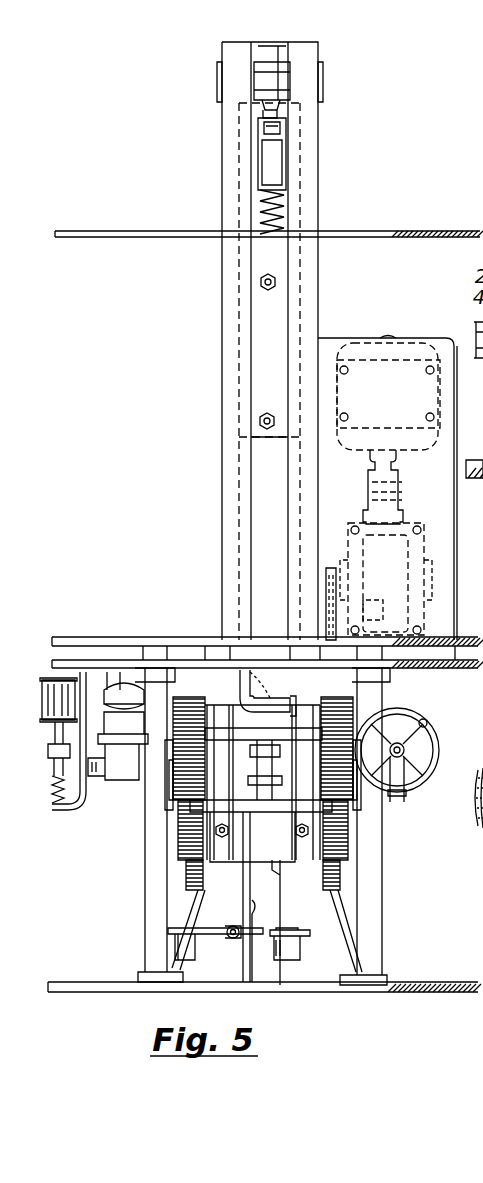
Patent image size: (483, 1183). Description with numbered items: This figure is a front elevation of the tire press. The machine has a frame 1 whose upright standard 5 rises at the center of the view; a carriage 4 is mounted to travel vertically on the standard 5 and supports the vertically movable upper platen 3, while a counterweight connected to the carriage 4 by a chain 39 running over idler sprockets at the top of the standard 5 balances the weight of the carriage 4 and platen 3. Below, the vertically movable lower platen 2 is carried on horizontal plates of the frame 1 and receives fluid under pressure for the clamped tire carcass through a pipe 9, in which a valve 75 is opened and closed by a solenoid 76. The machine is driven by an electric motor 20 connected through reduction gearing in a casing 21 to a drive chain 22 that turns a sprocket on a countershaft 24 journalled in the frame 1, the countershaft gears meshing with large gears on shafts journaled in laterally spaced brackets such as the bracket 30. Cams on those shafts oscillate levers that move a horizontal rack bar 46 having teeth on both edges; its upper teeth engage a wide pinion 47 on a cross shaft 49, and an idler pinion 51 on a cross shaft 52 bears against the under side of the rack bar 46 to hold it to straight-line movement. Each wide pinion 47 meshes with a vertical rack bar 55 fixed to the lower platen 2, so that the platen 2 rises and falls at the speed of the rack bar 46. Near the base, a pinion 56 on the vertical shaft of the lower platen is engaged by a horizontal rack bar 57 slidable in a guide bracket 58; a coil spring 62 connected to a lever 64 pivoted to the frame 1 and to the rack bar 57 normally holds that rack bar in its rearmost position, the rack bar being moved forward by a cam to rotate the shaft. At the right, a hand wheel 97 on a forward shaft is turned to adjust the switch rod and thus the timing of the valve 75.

The frame 1 is at (382, 932).
The lower platen 2 is at (122, 637).
The upper platen 3 is at (396, 231).
The carriage 4 is at (252, 329).
The standard 5 is at (318, 318).
The pipe 9 is at (222, 680).
The electric motor 20 is at (393, 337).
The casing 21 is at (424, 552).
The drive chain 22 is at (362, 612).
The countershaft 24 is at (474, 663).
The bracket 30 is at (470, 368).
The chain 39 is at (280, 60).
The rack bar 46 is at (172, 765).
The wide pinion 47 is at (177, 697).
The cross shaft 49 is at (292, 712).
The idler pinion 51 is at (172, 800).
The cross shaft 52 is at (266, 815).
The vertical rack bar 55 is at (186, 885).
The pinion 56 is at (278, 950).
The rack bar 57 is at (290, 944).
The guide bracket 58 is at (292, 930).
The coil spring 62 is at (233, 926).
The lever 64 is at (196, 938).
The valve 75 is at (108, 770).
The solenoid 76 is at (45, 712).
The hand wheel 97 is at (420, 777).